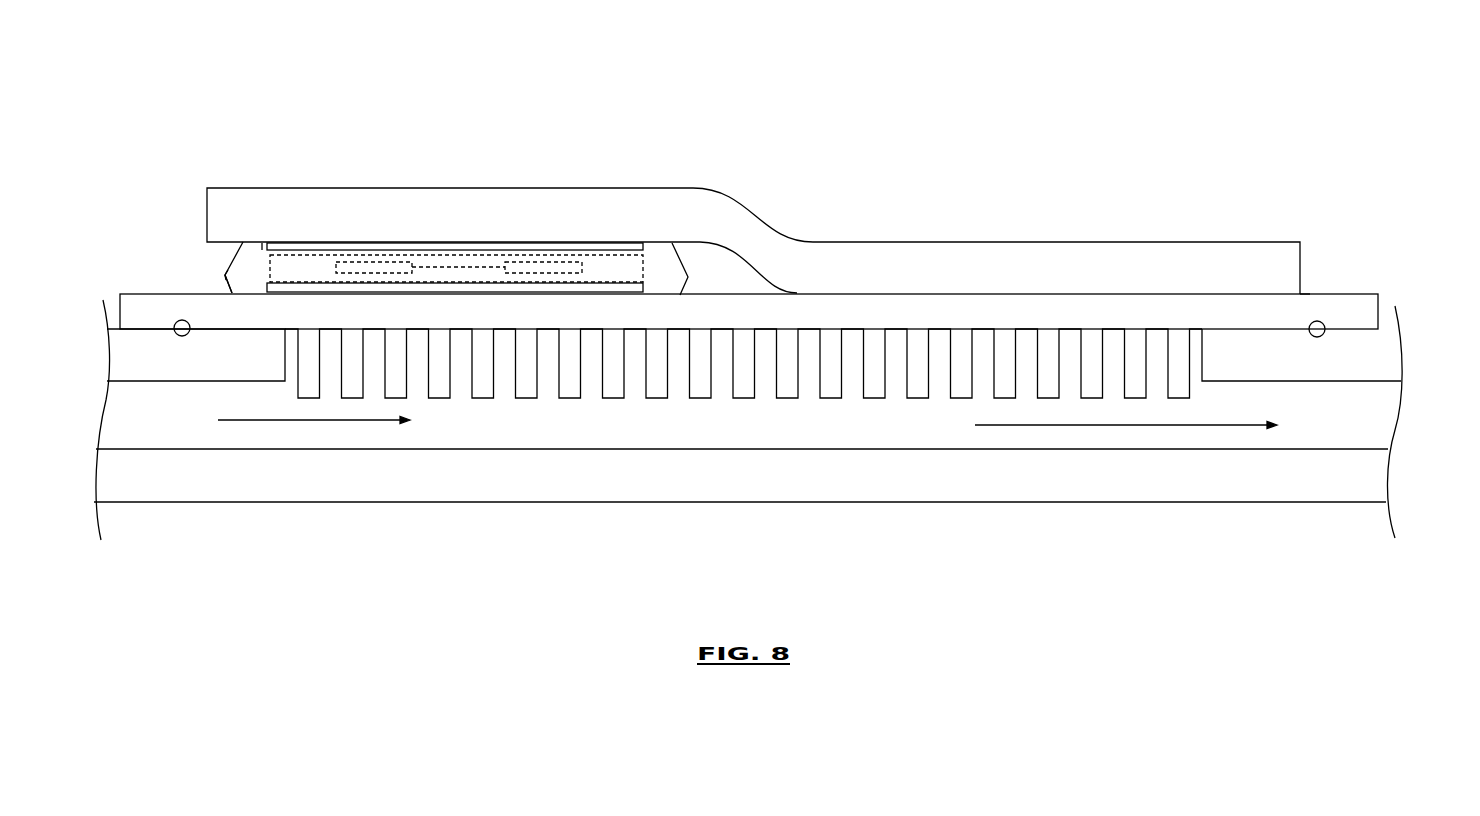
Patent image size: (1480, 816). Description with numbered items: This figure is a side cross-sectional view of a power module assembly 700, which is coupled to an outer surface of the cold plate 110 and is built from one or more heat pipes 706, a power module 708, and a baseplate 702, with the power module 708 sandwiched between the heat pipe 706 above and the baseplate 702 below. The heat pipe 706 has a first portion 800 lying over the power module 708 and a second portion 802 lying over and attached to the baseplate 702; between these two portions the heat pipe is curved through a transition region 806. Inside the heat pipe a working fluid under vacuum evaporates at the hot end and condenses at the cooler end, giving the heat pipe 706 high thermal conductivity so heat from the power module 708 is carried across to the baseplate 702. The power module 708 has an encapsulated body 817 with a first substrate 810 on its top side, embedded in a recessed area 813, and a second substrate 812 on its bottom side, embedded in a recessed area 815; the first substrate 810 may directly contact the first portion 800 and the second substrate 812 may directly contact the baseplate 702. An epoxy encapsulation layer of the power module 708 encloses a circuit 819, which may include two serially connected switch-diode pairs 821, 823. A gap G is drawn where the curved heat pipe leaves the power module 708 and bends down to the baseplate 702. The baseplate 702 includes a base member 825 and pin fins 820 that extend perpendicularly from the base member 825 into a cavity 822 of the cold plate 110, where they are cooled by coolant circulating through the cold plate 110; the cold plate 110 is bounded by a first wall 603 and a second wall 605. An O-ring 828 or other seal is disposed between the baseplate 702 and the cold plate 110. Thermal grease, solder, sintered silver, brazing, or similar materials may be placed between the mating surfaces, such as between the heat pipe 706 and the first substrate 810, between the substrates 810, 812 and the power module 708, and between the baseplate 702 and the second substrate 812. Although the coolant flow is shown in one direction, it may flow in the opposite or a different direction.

The power module assembly 700 is at (343, 54).
The first portion 800 is at (325, 187).
The heat pipe 706 is at (620, 200).
The transition region 806 is at (767, 225).
The second portion 802 is at (1120, 255).
The first substrate 810 is at (492, 243).
The second substrate 812 is at (467, 290).
The circuit 819 is at (433, 255).
The switch-diode pair 821 is at (368, 262).
The switch-diode pair 823 is at (555, 262).
The recessed area 813 is at (260, 244).
The power module 708 is at (233, 258).
The encapsulated body 817 is at (237, 277).
The recessed area 815 is at (261, 292).
The gap G is at (703, 258).
The baseplate 702 is at (1377, 307).
The O-ring 828 is at (1320, 323).
The base member 825 is at (1307, 315).
The first wall 603 is at (1357, 359).
The pin fins 820 is at (747, 399).
The second wall 605 is at (1350, 474).
The cold plate 110 is at (1132, 503).
The cavity 822 is at (548, 412).